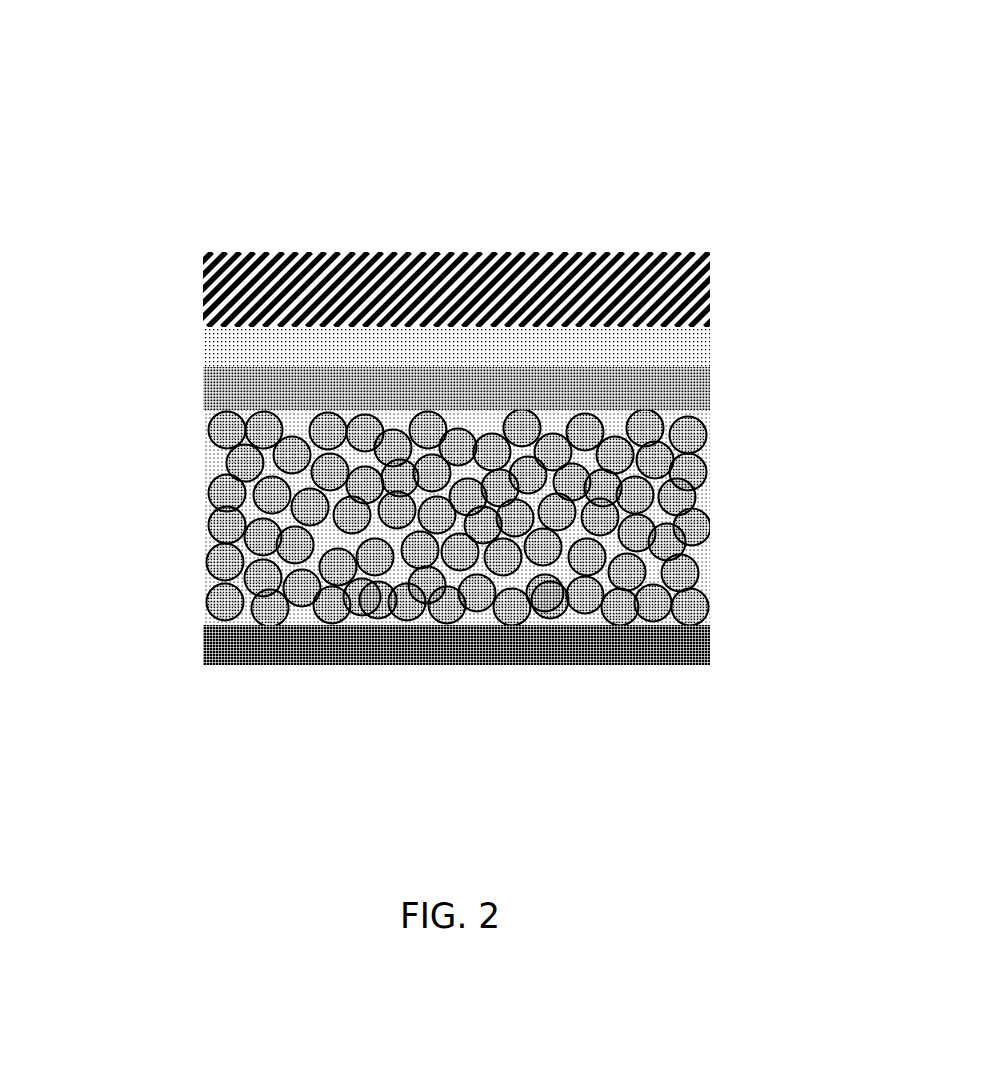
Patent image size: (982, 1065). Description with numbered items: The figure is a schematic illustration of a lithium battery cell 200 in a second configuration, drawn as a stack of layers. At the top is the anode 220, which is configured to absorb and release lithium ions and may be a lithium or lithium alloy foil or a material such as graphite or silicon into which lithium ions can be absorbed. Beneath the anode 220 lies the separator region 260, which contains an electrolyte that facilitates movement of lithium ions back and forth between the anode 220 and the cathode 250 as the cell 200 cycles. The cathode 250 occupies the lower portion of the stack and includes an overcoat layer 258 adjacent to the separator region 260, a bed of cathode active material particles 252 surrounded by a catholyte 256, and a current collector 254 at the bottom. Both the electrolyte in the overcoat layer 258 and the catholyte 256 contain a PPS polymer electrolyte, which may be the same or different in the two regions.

The lithium battery cell 200 is at (459, 394).
The anode 220 is at (250, 320).
The separator region 260 is at (648, 345).
The overcoat layer 258 is at (698, 395).
The catholyte 256 is at (536, 520).
The cathode active material particles 252 is at (507, 513).
The current collector 254 is at (394, 701).
The cathode 250 is at (473, 526).